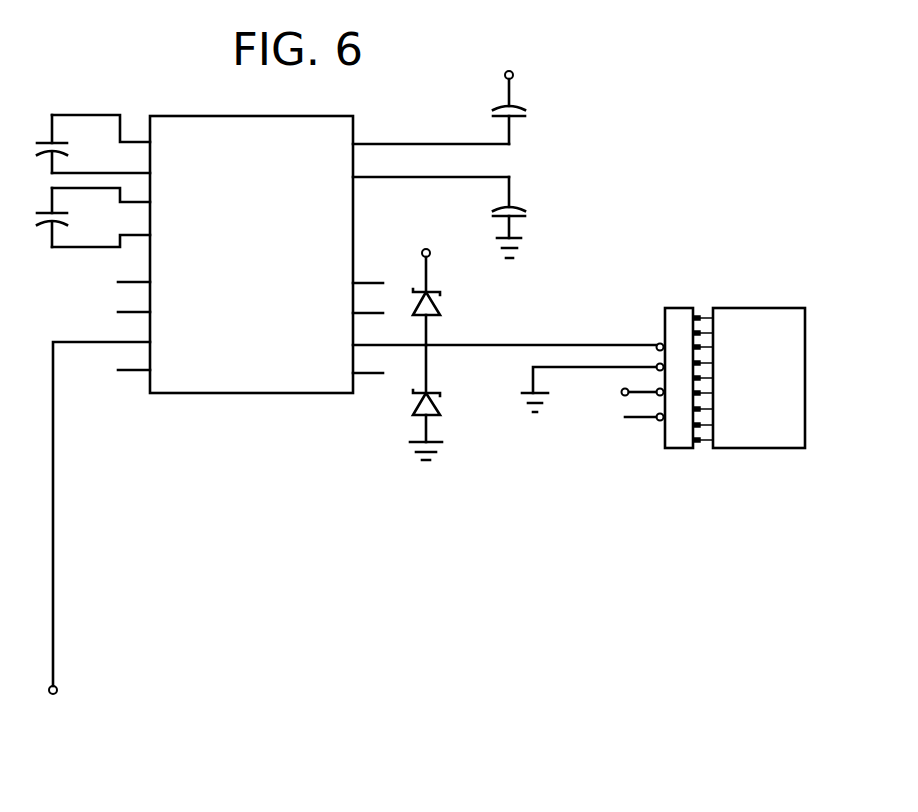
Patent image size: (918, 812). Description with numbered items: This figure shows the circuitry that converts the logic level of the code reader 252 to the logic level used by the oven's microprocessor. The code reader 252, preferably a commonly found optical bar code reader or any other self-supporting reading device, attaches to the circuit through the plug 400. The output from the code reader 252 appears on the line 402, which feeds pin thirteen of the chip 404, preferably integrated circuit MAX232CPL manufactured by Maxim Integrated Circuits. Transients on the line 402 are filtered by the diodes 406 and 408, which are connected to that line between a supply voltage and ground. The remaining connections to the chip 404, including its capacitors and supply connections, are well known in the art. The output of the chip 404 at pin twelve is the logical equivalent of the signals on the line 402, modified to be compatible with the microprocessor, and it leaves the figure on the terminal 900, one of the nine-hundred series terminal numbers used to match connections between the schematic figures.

The plug 400 is at (778, 270).
The line 402 is at (466, 344).
The chip 404 is at (256, 396).
The diode 406 is at (434, 304).
The diode 408 is at (436, 404).
The code reader 252 is at (757, 449).
The 900 series terminal number 900 is at (89, 534).